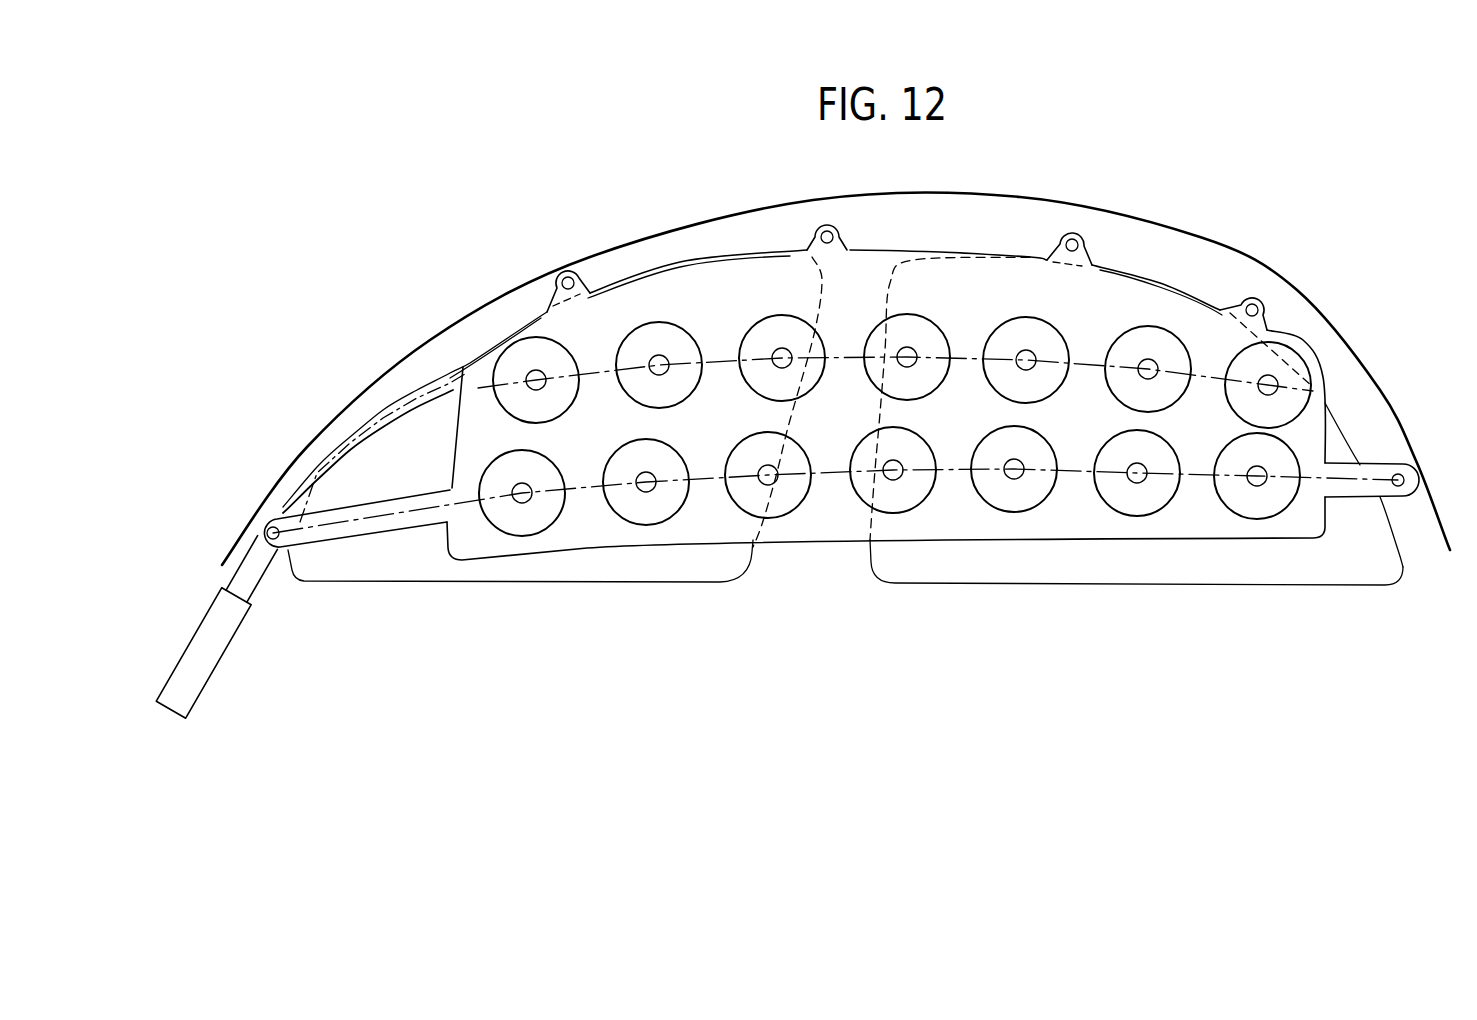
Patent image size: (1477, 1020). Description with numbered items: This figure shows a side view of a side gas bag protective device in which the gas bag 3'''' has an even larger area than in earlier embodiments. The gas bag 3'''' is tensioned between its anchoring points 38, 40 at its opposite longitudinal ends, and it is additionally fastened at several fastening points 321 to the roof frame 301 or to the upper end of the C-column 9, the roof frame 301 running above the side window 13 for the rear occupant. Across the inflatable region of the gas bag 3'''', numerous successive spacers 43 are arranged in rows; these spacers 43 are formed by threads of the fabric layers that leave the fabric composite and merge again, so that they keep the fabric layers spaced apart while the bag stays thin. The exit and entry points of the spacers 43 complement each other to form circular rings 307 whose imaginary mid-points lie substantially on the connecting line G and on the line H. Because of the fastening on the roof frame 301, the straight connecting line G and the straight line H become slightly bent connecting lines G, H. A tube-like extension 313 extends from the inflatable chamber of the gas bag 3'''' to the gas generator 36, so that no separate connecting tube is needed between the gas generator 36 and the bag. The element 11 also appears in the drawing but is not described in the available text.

The C-column 9 is at (1365, 407).
The roof frame 301 is at (962, 210).
The fastening points 321 is at (567, 282).
The tube-like extension 313 is at (343, 446).
The circular ring 307 is at (537, 540).
The anchoring point 38 is at (267, 532).
The gas generator 36 is at (214, 658).
The anchoring point 40 is at (1407, 471).
The lower plate segment 11 is at (383, 560).
The side window 13 is at (1250, 565).
The spacers 43 is at (657, 515).
The gas bag 3'''' is at (960, 584).
The straight line H is at (1003, 355).
The straight connecting line G is at (1110, 483).